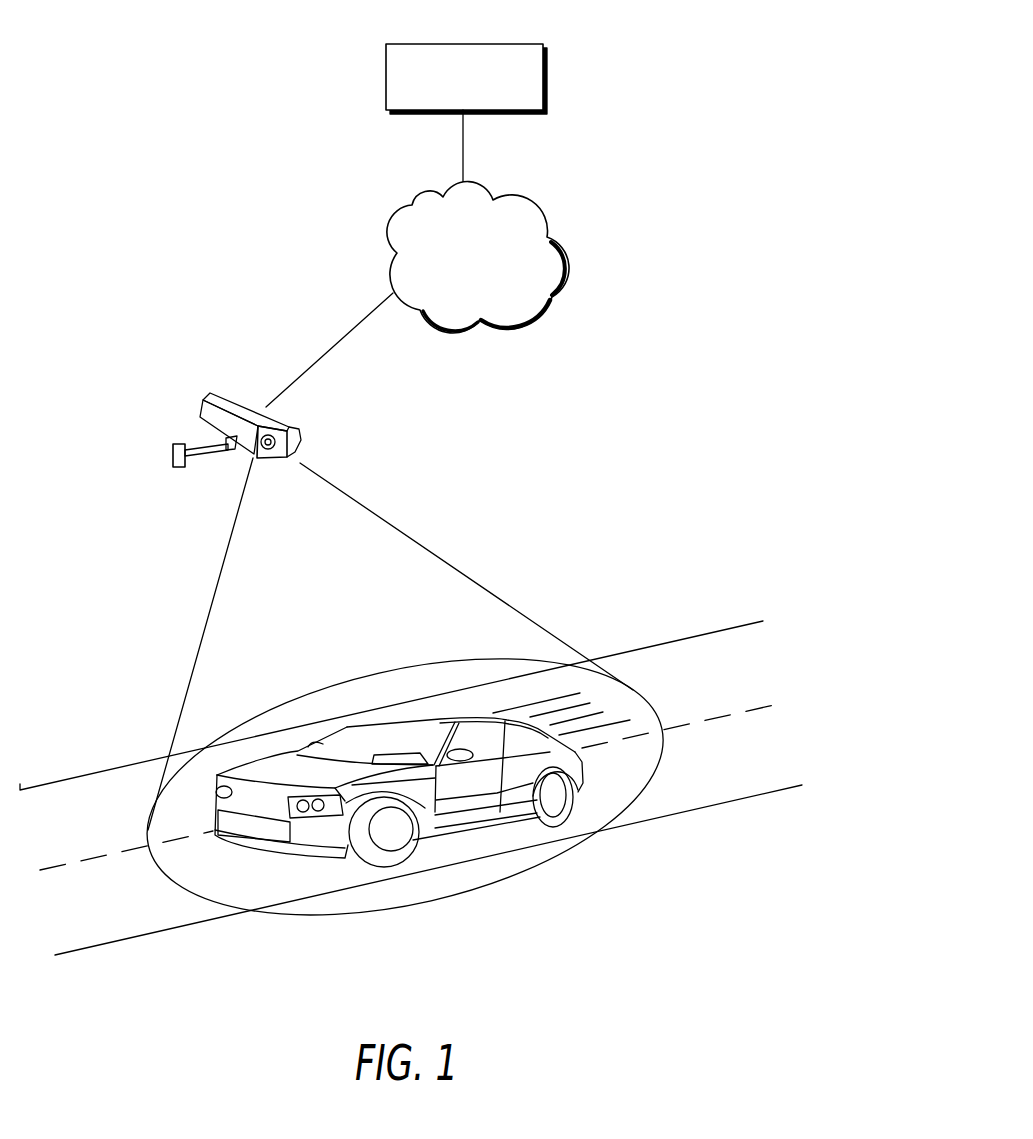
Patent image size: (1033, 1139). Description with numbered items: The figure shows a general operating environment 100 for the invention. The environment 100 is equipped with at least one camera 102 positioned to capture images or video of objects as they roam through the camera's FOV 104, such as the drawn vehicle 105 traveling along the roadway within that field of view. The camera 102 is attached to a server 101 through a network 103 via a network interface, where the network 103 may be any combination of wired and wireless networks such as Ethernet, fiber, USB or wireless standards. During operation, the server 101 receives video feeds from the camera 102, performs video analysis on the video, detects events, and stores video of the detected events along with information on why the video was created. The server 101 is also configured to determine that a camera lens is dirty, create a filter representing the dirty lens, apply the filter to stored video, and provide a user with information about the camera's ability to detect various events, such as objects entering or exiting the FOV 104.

The operating environment 100 is at (178, 31).
The server 101 is at (386, 70).
The camera 102 is at (206, 393).
The network 103 is at (408, 207).
The FOV 104 is at (378, 672).
The vehicle 105 is at (467, 835).